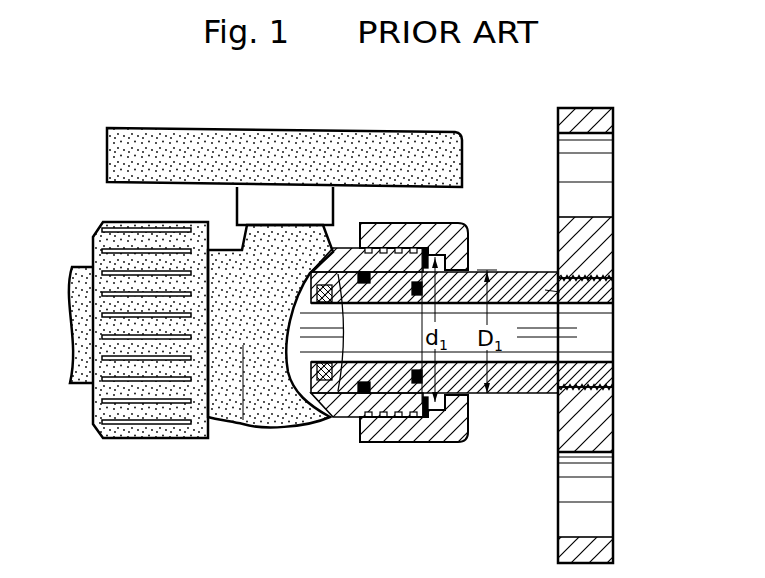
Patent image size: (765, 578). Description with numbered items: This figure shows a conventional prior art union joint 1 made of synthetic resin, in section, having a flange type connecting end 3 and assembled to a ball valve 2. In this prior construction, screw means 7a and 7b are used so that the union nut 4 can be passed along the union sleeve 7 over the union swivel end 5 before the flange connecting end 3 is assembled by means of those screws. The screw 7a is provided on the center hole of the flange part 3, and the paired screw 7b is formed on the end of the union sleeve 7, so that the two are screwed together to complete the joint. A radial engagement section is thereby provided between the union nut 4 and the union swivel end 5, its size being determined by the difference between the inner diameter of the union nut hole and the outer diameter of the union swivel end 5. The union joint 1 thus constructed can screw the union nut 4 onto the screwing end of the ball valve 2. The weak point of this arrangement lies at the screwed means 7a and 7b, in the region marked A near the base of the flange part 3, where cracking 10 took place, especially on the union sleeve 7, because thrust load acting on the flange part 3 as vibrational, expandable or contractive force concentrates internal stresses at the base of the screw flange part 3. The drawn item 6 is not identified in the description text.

The union joint 1 is at (483, 477).
The ball valve 2 is at (374, 127).
The flange type connecting end 3 is at (603, 235).
The union nut 4 is at (412, 223).
The union swivel end 5 is at (405, 423).
The sleeve flange portion 6 is at (467, 422).
The union sleeve 7 is at (508, 288).
The screw 7a is at (600, 282).
The paired screw 7b is at (568, 305).
The cracking 10 is at (556, 290).
The gap region A is at (545, 400).